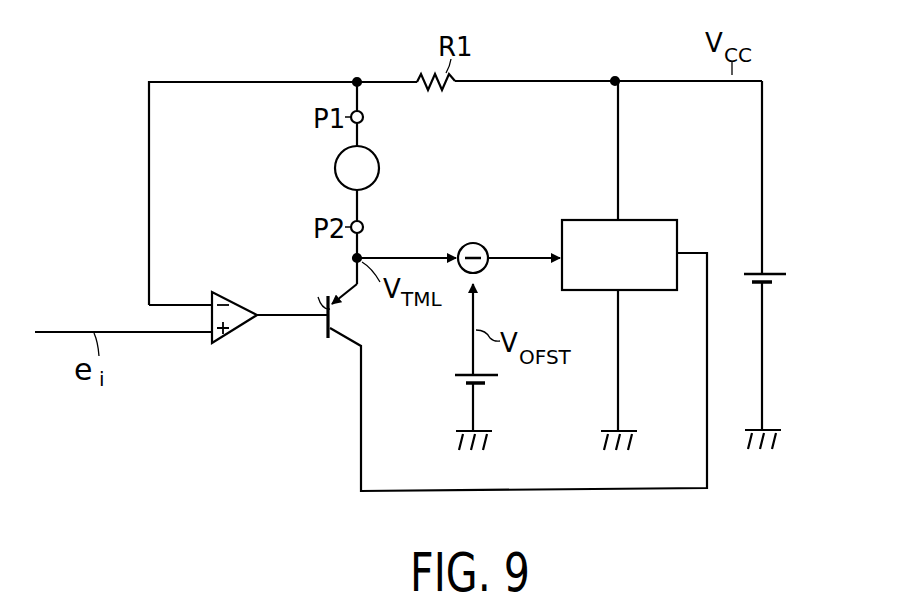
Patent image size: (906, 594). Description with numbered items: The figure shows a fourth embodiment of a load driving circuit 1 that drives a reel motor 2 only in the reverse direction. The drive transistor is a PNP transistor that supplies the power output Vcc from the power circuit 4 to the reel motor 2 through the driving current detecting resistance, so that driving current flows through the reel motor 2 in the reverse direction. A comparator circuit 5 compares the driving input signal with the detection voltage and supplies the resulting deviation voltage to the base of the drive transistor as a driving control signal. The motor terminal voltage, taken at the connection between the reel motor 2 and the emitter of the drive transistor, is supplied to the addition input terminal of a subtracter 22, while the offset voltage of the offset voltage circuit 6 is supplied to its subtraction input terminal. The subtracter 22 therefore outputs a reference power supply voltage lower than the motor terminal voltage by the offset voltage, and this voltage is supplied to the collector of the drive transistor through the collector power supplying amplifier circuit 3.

The load driving circuit 1 is at (258, 434).
The reel motor 2 is at (376, 182).
The collector power supplying amplifier circuit 3 is at (661, 291).
The power circuit 4 is at (767, 284).
The comparator circuit 5 is at (245, 326).
The offset voltage circuit 6 is at (489, 403).
The subtracter 22 is at (490, 268).